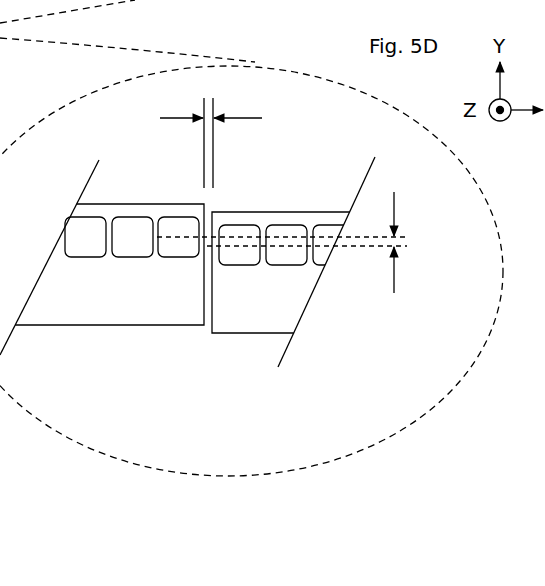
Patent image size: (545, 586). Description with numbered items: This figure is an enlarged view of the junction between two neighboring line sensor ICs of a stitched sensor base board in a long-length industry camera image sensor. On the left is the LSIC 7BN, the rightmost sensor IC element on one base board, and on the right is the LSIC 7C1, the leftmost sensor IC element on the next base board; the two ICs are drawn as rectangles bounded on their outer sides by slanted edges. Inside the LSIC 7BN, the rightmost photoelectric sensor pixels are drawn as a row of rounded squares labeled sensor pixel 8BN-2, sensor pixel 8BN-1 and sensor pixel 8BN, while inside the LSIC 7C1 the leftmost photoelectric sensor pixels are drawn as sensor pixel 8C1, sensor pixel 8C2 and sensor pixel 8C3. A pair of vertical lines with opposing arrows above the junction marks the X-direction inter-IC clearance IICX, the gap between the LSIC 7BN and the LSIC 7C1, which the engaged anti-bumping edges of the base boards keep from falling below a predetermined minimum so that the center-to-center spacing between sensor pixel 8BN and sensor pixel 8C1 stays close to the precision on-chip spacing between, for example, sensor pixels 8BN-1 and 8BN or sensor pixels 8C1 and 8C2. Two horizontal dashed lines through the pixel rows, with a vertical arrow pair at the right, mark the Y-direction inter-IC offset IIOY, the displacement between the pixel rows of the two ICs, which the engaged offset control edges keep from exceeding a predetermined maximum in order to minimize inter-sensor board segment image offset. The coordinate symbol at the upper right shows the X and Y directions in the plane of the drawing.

The LSIC 7BN is at (107, 325).
The LSIC 7C1 is at (237, 333).
The photoelectric sensor pixel 8BN-2 is at (83, 255).
The photoelectric sensor pixel 8BN-1 is at (138, 255).
The photoelectric sensor pixel 8BN is at (173, 222).
The photoelectric sensor pixel 8C1 is at (238, 232).
The photoelectric sensor pixel 8C2 is at (285, 232).
The photoelectric sensor pixel 8C3 is at (322, 252).
The X-direction inter-IC clearance IICX is at (235, 143).
The Y-direction inter-IC offset IIOY is at (402, 239).